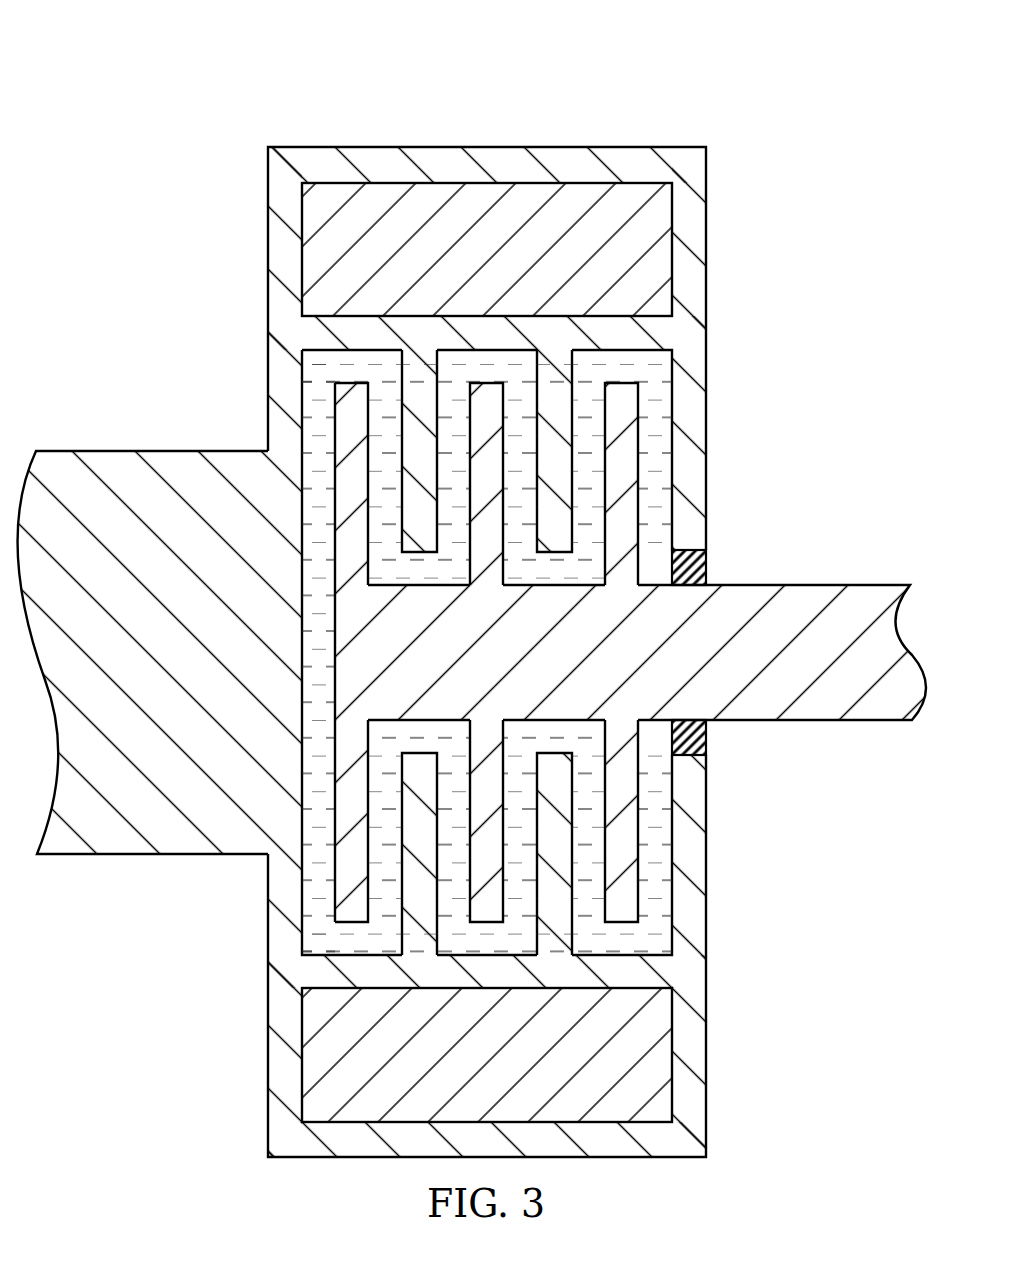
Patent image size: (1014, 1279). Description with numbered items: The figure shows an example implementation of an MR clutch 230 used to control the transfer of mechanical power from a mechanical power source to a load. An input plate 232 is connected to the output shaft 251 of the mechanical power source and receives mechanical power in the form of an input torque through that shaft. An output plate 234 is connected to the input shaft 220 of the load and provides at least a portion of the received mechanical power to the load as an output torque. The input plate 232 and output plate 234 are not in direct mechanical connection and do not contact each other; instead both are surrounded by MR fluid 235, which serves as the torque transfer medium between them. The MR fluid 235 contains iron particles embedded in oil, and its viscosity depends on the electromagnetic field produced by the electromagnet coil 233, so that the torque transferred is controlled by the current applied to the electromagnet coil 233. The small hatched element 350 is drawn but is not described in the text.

The MR clutch 230 is at (269, 66).
The electromagnet coil 233 is at (533, 197).
The input plate 232 is at (417, 432).
The MR fluid 235 is at (658, 383).
The output plate 234 is at (620, 465).
The input shaft 220 is at (743, 595).
The output shaft 251 is at (113, 460).
The seal 350 is at (700, 736).